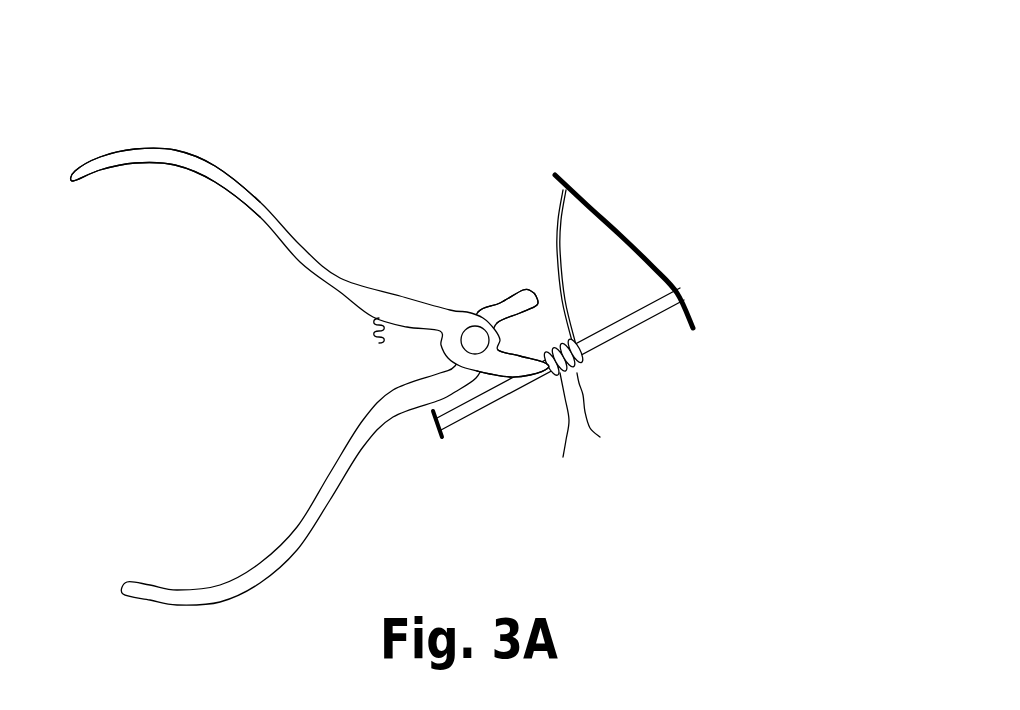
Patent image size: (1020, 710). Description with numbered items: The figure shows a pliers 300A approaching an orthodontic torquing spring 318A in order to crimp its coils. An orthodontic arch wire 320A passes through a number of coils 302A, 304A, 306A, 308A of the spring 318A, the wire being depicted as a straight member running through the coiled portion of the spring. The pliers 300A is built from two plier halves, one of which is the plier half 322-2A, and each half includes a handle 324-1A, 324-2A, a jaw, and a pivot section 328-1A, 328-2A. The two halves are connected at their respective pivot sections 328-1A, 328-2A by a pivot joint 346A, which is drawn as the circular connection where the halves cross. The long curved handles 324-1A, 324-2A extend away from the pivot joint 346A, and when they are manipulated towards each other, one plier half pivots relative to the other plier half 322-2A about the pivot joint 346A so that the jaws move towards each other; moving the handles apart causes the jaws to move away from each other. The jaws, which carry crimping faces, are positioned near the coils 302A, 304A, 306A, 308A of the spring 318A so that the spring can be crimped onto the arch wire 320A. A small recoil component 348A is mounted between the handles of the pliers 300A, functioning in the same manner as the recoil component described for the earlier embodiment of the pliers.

The pliers 300A is at (310, 370).
The coil 302A is at (545, 377).
The coil 304A is at (561, 430).
The coil 306A is at (613, 412).
The coil 308A is at (583, 357).
The orthodontic torquing spring 318A is at (544, 220).
The orthodontic arch wire 320A is at (618, 323).
The plier half 322-2A is at (175, 122).
The handle 324-1A is at (180, 603).
The handle 324-2A is at (145, 160).
The pivot section 328-1A is at (477, 383).
The pivot section 328-2A is at (466, 295).
The pivot joint 346A is at (475, 340).
The recoil component 348A is at (371, 333).